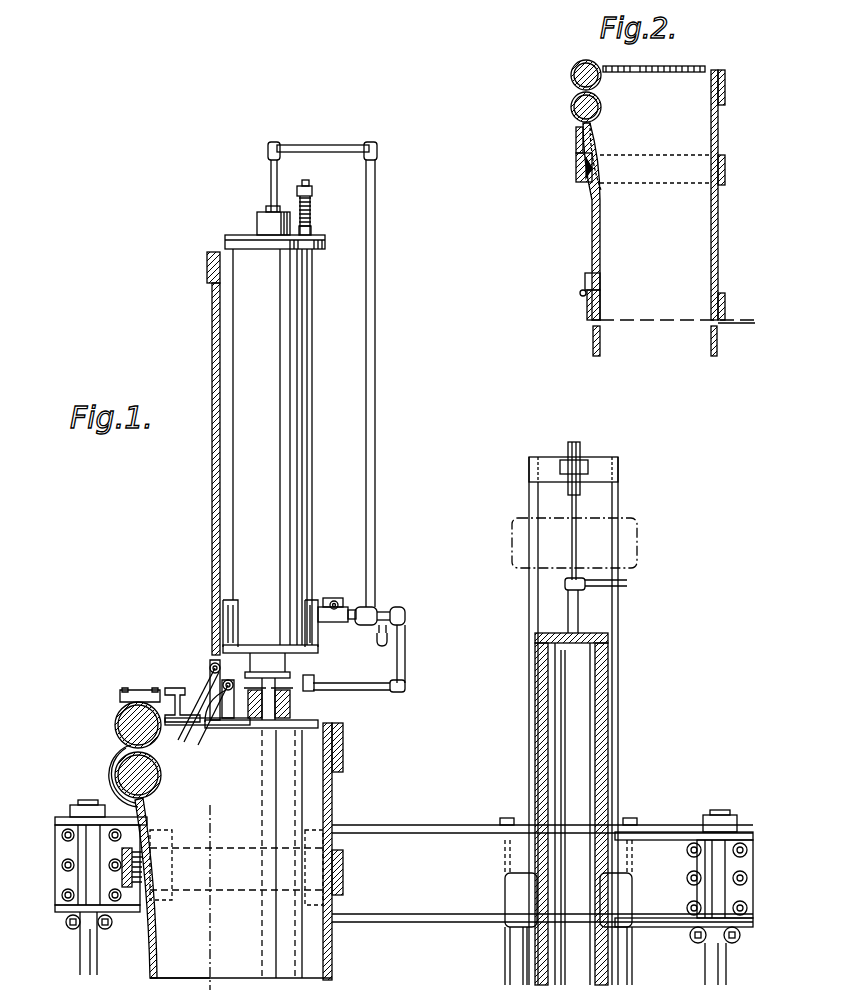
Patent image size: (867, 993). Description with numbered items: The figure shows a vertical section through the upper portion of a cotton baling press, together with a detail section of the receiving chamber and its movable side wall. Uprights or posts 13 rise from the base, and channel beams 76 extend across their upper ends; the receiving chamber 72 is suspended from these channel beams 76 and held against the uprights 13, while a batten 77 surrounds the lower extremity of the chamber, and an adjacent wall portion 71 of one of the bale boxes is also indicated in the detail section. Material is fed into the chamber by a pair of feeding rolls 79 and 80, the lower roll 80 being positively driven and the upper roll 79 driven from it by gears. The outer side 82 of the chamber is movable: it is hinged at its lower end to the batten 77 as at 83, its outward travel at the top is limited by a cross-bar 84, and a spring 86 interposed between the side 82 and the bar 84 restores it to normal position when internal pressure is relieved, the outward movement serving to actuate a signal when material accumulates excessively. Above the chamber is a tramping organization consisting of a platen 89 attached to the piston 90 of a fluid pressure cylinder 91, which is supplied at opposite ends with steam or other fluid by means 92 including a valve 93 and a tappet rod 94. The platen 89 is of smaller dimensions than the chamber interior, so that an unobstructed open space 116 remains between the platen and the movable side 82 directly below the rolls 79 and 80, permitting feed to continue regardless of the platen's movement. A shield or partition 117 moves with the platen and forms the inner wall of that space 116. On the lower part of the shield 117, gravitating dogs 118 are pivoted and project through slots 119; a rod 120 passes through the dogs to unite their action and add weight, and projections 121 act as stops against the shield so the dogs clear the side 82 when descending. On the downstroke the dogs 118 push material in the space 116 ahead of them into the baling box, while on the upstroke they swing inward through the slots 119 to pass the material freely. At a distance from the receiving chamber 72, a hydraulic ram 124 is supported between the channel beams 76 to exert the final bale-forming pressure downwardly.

In FIG. 1, the uprights or posts 13 is at (82, 956).
In FIG. 2, the wall 71 is at (763, 303).
In FIG. 1, the receiving chamber 72 is at (336, 952).
In FIG. 1, the channel beams 76 is at (542, 873).
In FIG. 2, the batten 77 is at (586, 302).
In FIG. 1, the feeding roll 79 is at (116, 727).
In FIG. 2, the feeding roll 79 is at (571, 77).
In FIG. 1, the feeding roll 80 is at (112, 773).
In FIG. 2, the feeding roll 80 is at (571, 109).
In FIG. 1, the movable side 82 is at (132, 888).
In FIG. 2, the hinge attachment 83 is at (583, 285).
In FIG. 1, the cross-bar 84 is at (85, 878).
In FIG. 2, the cross-bar 84 is at (575, 178).
In FIG. 1, the spring 86 is at (145, 870).
In FIG. 2, the spring 86 is at (577, 172).
In FIG. 1, the platen 89 is at (255, 726).
In FIG. 1, the piston 90 is at (268, 683).
In FIG. 1, the fluid pressure cylinder 91 is at (240, 535).
In FIG. 1, the fluid pressure supply means 92 is at (366, 571).
In FIG. 1, the valve 93 is at (343, 623).
In FIG. 1, the tappet rod 94 is at (315, 700).
In FIG. 1, the open space 116 is at (205, 950).
In FIG. 1, the shield or partition 117 is at (212, 458).
In FIG. 1, the dogs 118 is at (210, 677).
In FIG. 1, the slots 119 is at (213, 667).
In FIG. 1, the rod 120 is at (210, 756).
In FIG. 1, the projections 121 is at (205, 732).
In FIG. 1, the hydraulic ram 124 is at (530, 792).